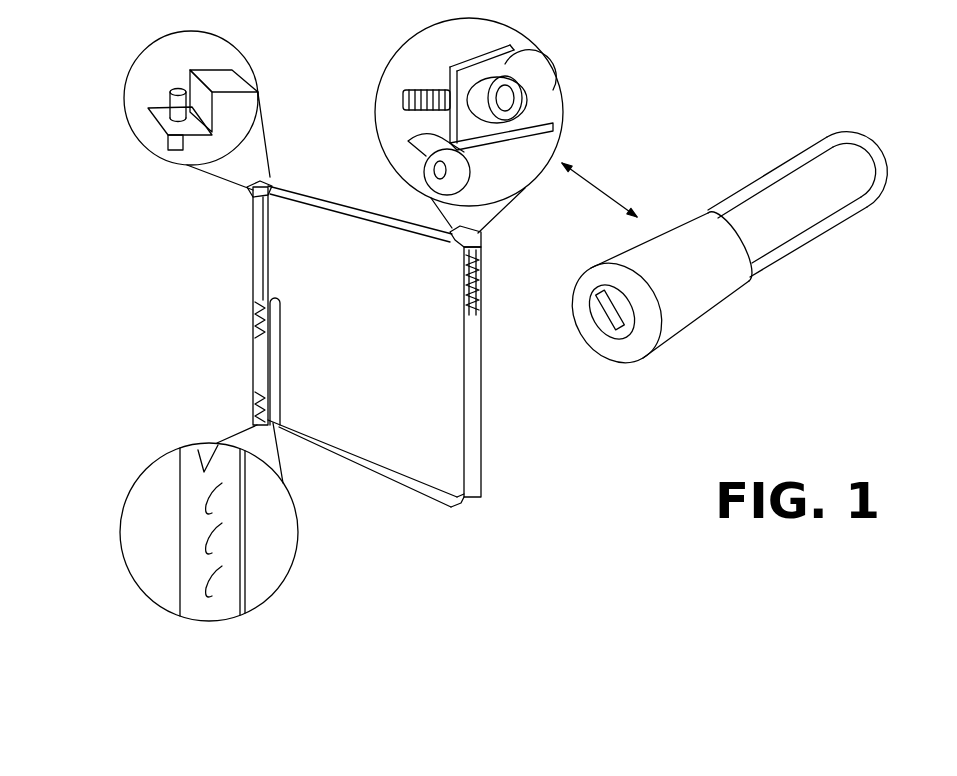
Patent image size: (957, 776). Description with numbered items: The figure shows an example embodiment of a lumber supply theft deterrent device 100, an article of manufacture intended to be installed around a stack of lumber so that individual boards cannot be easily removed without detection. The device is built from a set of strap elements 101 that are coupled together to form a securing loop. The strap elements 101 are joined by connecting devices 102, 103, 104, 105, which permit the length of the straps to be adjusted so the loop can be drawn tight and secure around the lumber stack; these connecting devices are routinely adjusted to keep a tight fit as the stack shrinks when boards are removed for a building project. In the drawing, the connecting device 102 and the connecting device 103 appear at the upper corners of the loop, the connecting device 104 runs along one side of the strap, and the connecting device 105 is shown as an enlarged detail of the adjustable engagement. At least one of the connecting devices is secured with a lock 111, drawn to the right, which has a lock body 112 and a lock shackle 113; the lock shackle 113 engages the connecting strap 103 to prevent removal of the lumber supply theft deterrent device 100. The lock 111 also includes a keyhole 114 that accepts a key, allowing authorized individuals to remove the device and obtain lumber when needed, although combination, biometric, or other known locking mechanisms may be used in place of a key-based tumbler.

The lumber supply theft deterrent device 100 is at (461, 315).
The strap elements 101 is at (367, 346).
The connecting device 102 is at (153, 114).
The connecting device 103 is at (499, 128).
The connecting device 104 is at (213, 346).
The connecting device 105 is at (183, 518).
The lock 111 is at (704, 278).
The lock body 112 is at (653, 321).
The lock shackle 113 is at (781, 201).
The keyhole 114 is at (573, 348).